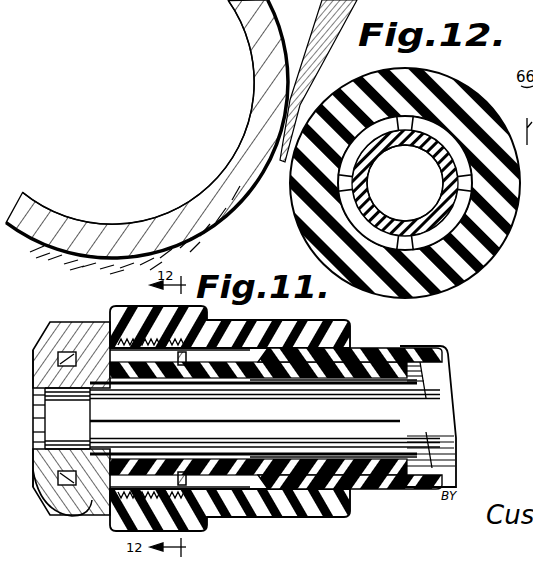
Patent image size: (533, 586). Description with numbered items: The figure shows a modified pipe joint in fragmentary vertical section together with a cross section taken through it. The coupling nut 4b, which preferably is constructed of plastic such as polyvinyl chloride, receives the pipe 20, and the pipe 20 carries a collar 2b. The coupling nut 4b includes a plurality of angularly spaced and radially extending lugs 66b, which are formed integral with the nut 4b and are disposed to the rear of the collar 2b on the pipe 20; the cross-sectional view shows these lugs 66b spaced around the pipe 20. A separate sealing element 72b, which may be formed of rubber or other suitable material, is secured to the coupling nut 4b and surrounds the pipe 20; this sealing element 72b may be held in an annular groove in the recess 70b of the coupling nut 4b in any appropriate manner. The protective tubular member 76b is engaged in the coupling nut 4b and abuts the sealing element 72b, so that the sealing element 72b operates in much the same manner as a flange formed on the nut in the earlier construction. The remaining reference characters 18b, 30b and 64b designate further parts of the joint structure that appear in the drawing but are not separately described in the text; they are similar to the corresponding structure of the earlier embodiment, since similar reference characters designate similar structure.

In FIG. 11, the collar 2b is at (112, 476).
In FIG. 12, the coupling nut 4b is at (487, 246).
In FIG. 11, the coupling nut 4b is at (252, 330).
In FIG. 11, the shoulder 18b is at (90, 415).
In FIG. 12, the pipe 20 is at (368, 201).
In FIG. 11, the pipe 20 is at (445, 394).
In FIG. 11, the bore 30b is at (106, 389).
In FIG. 11, the flange 64b is at (80, 512).
In FIG. 12, the lugs 66b is at (403, 163).
In FIG. 11, the lugs 66b is at (186, 357).
In FIG. 11, the recess 70b is at (260, 395).
In FIG. 11, the sealing element 72b is at (337, 395).
In FIG. 11, the protective tubular member 76b is at (403, 348).